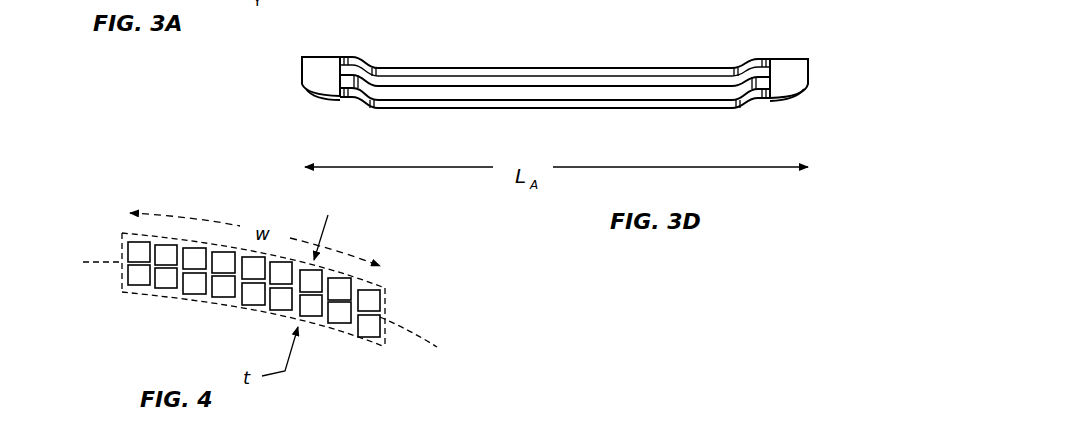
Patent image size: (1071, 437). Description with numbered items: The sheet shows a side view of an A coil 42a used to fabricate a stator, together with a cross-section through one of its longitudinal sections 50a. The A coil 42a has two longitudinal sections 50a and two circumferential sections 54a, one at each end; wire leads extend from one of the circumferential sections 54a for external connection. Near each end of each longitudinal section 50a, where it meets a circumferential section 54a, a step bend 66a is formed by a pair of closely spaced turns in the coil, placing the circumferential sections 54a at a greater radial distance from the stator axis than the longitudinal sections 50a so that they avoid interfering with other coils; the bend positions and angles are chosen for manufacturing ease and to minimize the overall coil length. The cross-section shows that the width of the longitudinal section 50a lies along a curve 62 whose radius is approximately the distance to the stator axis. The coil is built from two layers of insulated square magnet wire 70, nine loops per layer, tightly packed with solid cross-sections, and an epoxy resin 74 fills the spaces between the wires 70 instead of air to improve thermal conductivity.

In FIG. 3D, the A coil 42a is at (676, 45).
In FIG. 3D, the longitudinal section 50a is at (460, 68).
In FIG. 4, the longitudinal section 50a is at (140, 294).
In FIG. 3D, the circumferential section 54a is at (800, 30).
In FIG. 3D, the step bend 66a is at (358, 42).
In FIG. 4, the curve 62 is at (413, 328).
In FIG. 4, the insulated square magnet wire 70 is at (372, 304).
In FIG. 4, the epoxy resin 74 is at (210, 298).